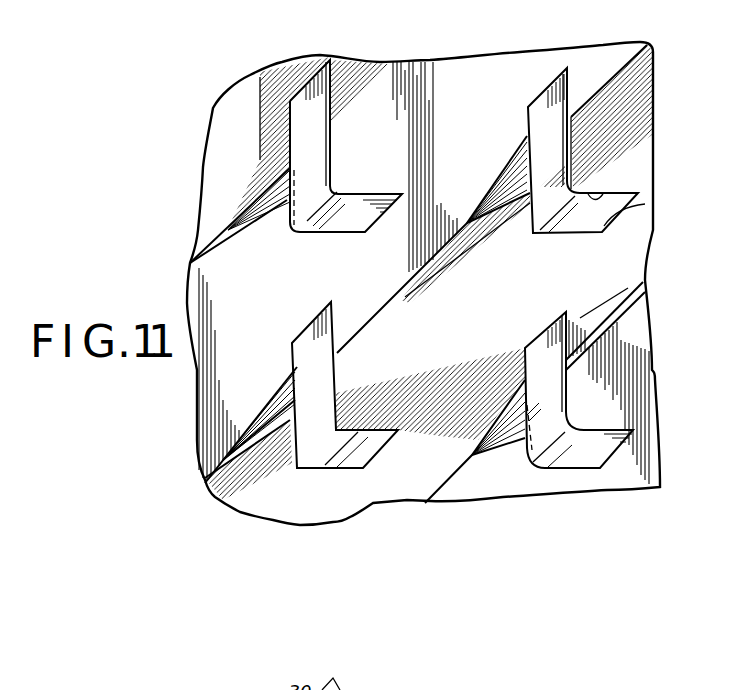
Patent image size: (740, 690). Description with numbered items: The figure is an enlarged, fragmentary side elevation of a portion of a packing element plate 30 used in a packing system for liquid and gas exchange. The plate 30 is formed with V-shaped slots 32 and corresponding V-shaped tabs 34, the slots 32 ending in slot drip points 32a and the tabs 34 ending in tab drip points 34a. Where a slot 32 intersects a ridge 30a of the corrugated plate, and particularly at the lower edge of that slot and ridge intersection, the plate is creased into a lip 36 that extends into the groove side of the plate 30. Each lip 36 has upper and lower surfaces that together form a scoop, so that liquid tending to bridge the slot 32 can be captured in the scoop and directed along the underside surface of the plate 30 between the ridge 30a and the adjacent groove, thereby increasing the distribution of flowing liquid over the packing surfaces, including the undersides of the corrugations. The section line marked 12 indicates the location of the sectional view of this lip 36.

The packing element plate 30 is at (562, 54).
The ridge 30a is at (617, 67).
The V-shaped slot 32 is at (645, 204).
The slot drip point 32a is at (620, 188).
The V-shaped tab 34 is at (325, 143).
The tab drip point 34a is at (306, 234).
The lip 36 is at (498, 177).
The section line 12- 12 is at (292, 343).